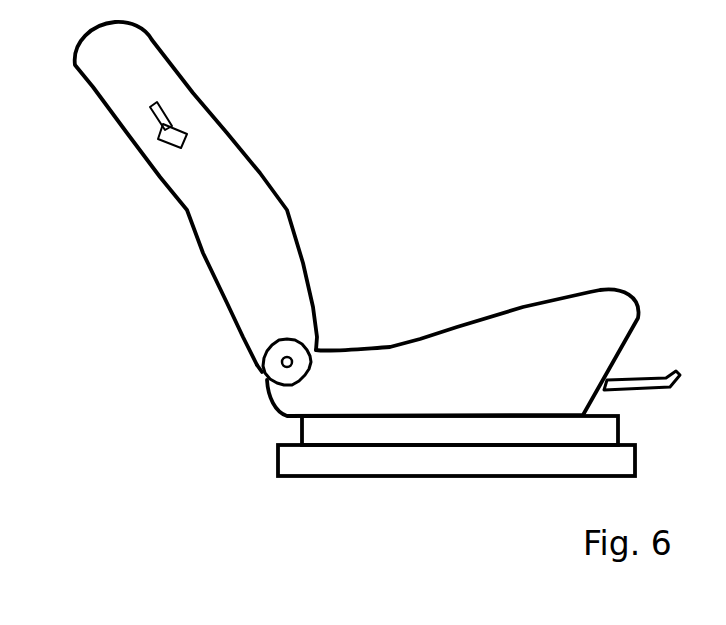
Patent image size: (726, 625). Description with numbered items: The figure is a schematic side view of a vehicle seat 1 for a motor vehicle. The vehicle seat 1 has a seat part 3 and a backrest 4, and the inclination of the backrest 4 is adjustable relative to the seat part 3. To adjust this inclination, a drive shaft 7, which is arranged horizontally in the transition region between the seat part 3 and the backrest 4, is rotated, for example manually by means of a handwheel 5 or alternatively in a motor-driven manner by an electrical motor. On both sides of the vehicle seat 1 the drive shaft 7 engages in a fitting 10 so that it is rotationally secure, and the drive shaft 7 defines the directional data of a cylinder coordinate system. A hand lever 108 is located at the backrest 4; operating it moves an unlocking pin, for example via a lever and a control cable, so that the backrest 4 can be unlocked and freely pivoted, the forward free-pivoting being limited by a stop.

The vehicle seat 1 is at (362, 131).
The seat part 3 is at (472, 343).
The backrest 4 is at (143, 57).
The handwheel 5 is at (300, 353).
The drive shaft 7 is at (283, 360).
The fitting 10 is at (254, 370).
The hand lever 108 is at (170, 143).